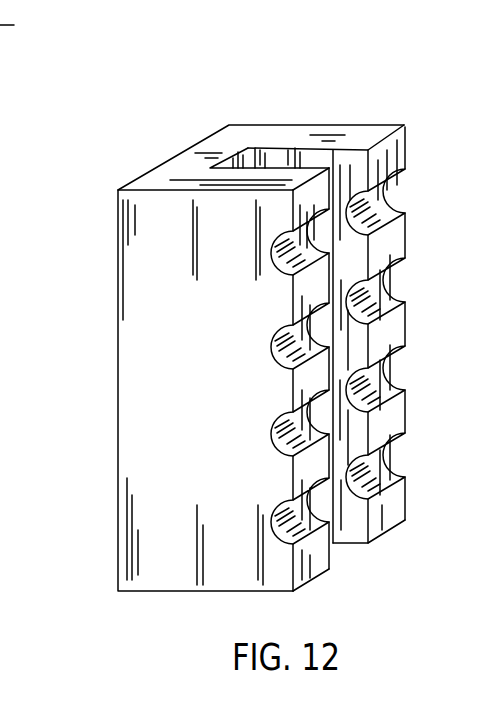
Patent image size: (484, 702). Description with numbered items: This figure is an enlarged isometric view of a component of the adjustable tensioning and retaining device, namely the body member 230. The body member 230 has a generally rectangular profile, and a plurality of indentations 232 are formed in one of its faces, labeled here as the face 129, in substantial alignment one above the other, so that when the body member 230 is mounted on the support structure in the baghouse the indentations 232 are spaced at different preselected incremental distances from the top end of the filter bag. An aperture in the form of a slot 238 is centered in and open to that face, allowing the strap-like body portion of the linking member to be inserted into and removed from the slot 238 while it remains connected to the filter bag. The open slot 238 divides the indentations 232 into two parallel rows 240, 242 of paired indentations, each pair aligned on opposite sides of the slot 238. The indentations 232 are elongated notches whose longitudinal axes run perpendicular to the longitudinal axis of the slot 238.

The body member 230 is at (140, 383).
The indentations 232 is at (360, 207).
The slot 238 is at (282, 158).
The rib 129 is at (347, 437).
The row of paired indentations 240 is at (405, 507).
The row of paired indentations 242 is at (323, 554).